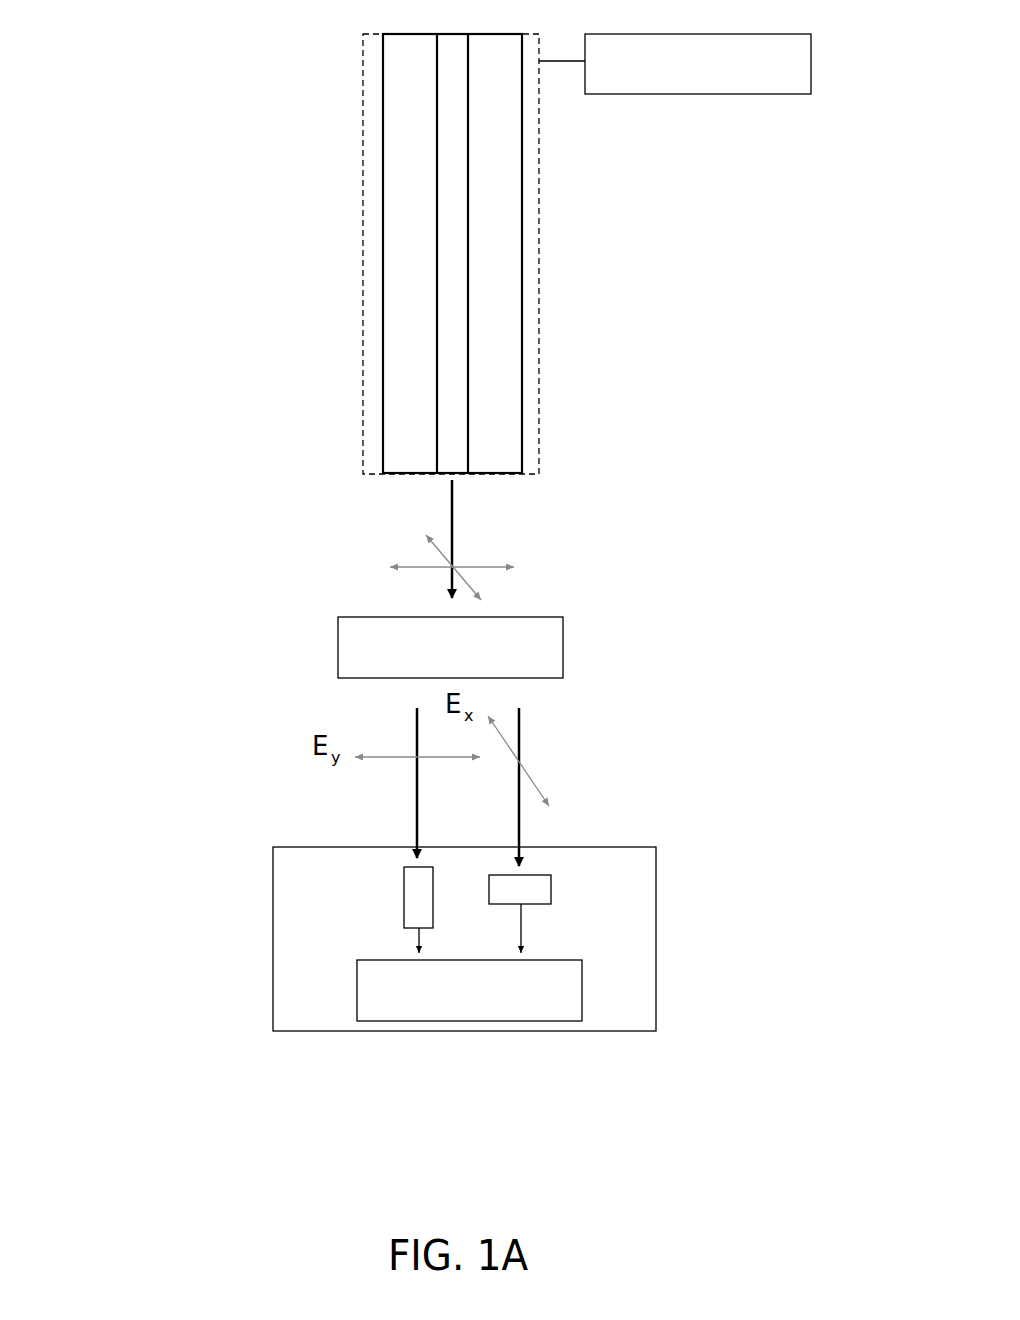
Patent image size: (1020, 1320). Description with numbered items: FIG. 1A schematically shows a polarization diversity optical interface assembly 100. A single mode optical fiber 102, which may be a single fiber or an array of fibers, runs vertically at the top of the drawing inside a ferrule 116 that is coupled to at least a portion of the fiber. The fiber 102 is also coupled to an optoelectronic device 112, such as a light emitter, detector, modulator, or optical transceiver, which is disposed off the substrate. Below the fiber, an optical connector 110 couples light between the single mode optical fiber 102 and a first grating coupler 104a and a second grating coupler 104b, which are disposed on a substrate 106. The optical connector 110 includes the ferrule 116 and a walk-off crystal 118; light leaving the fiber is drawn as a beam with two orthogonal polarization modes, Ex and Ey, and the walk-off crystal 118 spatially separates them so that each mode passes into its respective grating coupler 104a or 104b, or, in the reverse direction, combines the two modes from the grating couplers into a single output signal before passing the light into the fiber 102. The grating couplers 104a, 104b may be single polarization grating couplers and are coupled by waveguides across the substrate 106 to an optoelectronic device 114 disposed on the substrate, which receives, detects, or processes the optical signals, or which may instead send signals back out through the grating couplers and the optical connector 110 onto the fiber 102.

The polarization diversity optical interface assembly 100 is at (226, 116).
The single mode optical fiber 102 is at (409, 307).
The first grating coupler 104a is at (551, 877).
The second grating coupler 104b is at (404, 882).
The substrate 106 is at (273, 938).
The optical connector 110 is at (294, 513).
The optoelectronic device 112 is at (712, 94).
The optoelectronic device 114 is at (583, 993).
The ferrule 116 is at (363, 392).
The walk-off crystal 118 is at (338, 637).